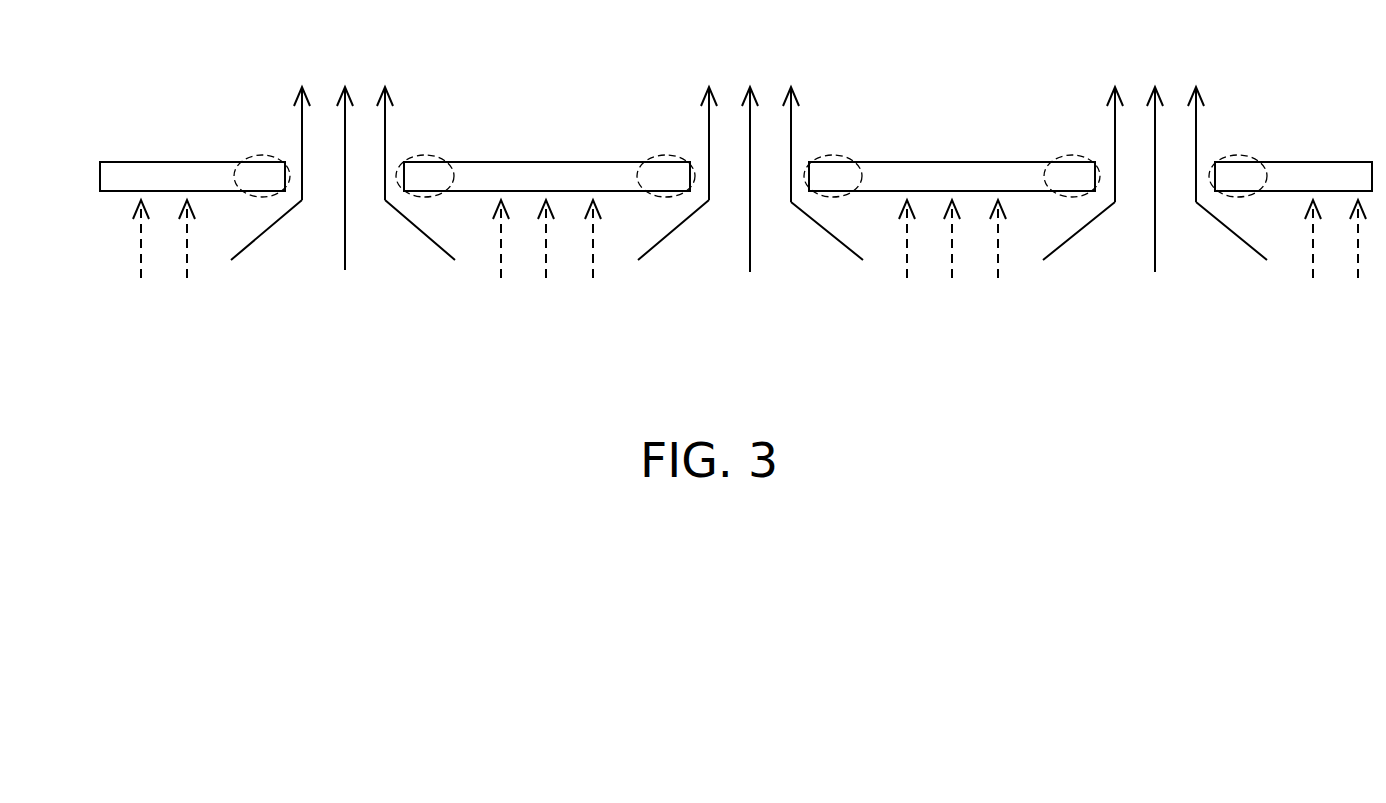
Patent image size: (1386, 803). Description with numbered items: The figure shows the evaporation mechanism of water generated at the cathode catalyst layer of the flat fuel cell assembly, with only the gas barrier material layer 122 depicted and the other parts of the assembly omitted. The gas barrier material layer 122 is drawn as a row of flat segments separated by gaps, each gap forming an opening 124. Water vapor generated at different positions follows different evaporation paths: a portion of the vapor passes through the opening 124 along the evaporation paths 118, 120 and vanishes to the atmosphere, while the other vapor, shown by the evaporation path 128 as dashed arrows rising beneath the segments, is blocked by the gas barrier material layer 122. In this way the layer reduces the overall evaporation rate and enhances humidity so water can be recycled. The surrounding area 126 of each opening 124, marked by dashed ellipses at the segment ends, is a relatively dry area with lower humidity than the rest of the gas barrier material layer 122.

The evaporation path 118 is at (344, 120).
The evaporation path 120 is at (302, 128).
The gas barrier material layer 122 is at (137, 170).
The opening 124 is at (701, 143).
The surrounding area 126 is at (662, 157).
The evaporation path 128 is at (593, 252).